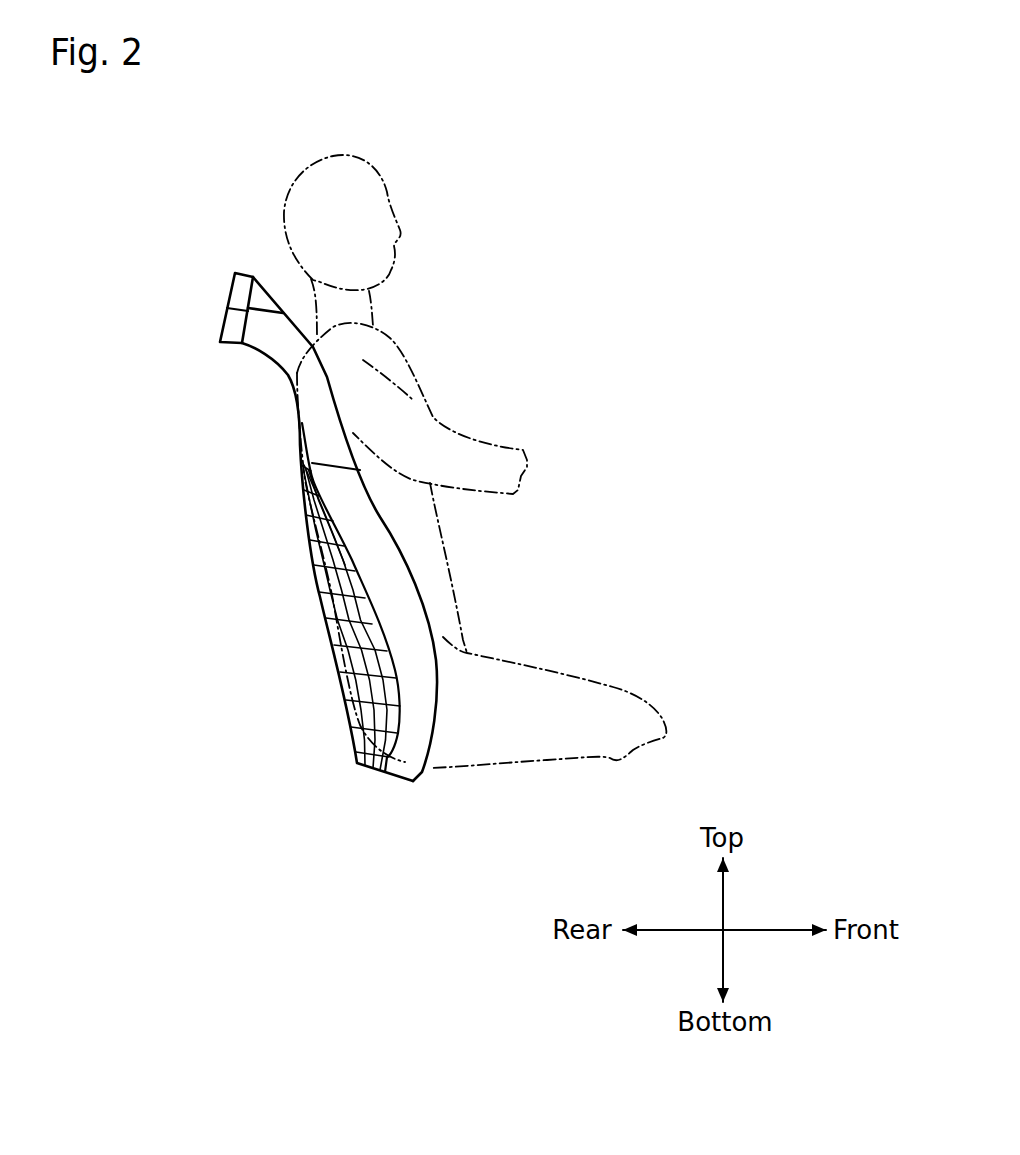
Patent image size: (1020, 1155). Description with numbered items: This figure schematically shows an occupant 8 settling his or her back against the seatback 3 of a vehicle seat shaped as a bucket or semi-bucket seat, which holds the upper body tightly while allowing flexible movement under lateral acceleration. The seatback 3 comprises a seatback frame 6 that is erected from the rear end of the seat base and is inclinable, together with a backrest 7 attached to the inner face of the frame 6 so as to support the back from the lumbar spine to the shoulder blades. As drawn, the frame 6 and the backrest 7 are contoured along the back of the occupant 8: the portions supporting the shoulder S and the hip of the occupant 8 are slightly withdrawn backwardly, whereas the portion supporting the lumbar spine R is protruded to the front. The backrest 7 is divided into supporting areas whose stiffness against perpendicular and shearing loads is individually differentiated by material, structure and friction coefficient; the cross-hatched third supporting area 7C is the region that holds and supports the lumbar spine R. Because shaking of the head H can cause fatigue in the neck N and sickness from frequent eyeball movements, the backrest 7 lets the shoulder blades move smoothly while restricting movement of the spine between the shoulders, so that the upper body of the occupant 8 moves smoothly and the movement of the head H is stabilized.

The seatback 3 is at (242, 392).
The seatback frame 6 is at (407, 593).
The backrest 7 is at (300, 553).
The third supporting area 7C is at (357, 662).
The occupant 8 is at (473, 330).
The head H is at (297, 175).
The neck N is at (303, 295).
The shoulder S is at (290, 437).
The lumbar spine R is at (330, 608).